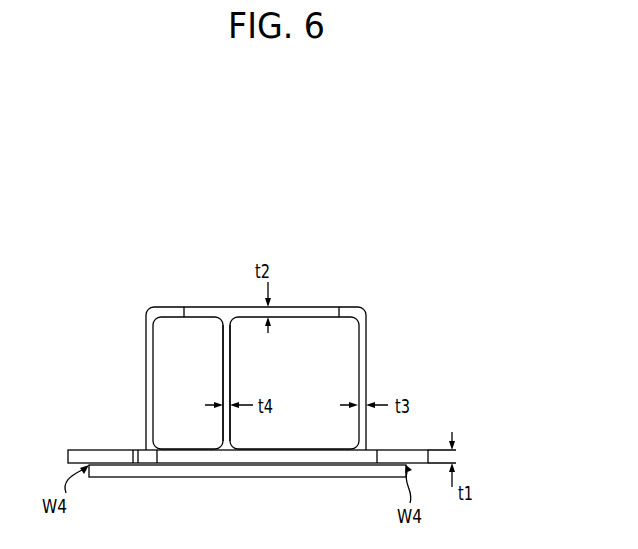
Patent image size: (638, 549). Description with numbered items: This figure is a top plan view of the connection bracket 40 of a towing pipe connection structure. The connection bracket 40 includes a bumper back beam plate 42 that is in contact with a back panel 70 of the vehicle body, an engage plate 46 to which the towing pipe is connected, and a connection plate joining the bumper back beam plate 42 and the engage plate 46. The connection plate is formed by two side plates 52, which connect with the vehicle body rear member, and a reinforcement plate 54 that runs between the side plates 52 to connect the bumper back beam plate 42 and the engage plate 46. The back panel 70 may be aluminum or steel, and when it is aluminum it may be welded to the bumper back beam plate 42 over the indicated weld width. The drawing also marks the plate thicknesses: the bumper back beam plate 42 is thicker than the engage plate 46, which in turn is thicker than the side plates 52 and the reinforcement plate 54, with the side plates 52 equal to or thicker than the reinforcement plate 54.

The connection bracket 40 is at (370, 244).
The bumper back beam plate 42 is at (87, 456).
The engage plate 46 is at (312, 313).
The side plate 52 is at (145, 352).
The reinforcement plate 54 is at (227, 348).
The back panel 70 is at (197, 470).